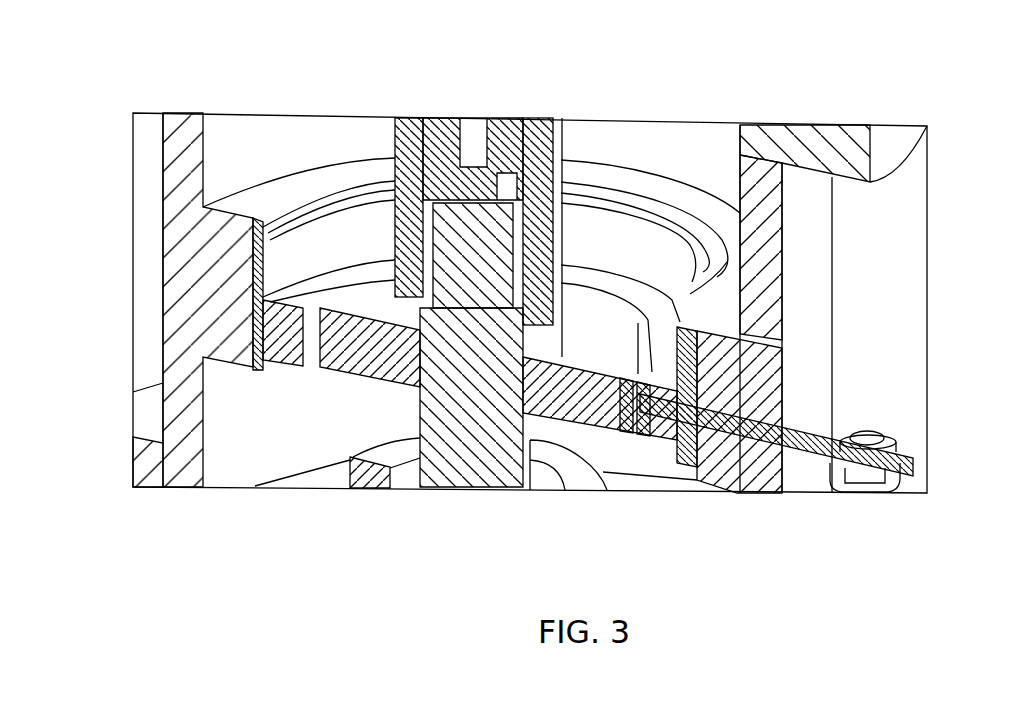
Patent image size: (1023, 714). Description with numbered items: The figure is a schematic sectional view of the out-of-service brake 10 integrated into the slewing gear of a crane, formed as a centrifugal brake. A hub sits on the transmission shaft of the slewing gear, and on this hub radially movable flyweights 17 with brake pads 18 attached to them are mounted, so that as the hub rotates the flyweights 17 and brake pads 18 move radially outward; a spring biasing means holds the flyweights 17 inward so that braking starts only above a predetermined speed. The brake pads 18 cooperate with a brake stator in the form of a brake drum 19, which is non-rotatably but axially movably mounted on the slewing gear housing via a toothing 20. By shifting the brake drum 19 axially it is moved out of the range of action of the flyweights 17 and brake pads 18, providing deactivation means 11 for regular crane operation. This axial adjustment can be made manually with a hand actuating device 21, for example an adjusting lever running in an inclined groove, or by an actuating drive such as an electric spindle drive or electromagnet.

The out-of-service brake 10 is at (690, 290).
The deactivation means 11 is at (658, 452).
The flyweights 17 is at (423, 429).
The brake pads 18 is at (337, 373).
The brake drum 19 is at (598, 262).
The toothing 20 is at (253, 299).
The hand actuating device 21 is at (800, 421).